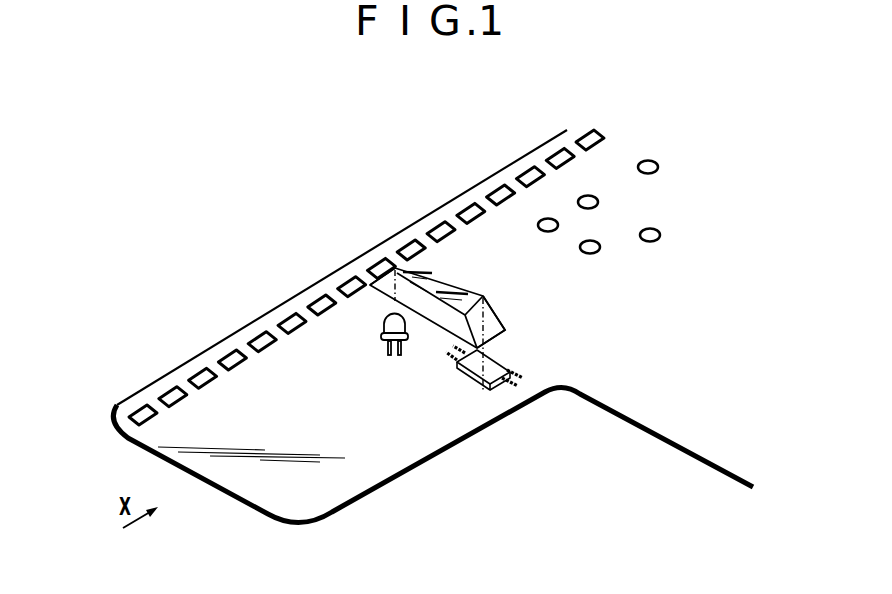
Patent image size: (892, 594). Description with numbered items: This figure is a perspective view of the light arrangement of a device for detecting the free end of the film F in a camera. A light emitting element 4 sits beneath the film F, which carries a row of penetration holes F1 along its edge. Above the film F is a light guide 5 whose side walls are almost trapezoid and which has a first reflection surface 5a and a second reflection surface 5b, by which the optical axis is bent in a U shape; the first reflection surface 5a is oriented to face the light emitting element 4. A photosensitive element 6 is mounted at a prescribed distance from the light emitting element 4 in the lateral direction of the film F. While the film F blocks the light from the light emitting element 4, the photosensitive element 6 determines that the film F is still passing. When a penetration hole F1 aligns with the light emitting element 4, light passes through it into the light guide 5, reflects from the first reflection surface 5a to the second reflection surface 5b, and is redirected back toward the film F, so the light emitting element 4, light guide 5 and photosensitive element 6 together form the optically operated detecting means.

The film F is at (242, 405).
The penetration hole F1 is at (552, 218).
The light emitting element 4 is at (385, 320).
The light guide 5 is at (452, 287).
The first reflection surface 5a is at (398, 258).
The second reflection surface 5b is at (505, 333).
The photosensitive element 6 is at (482, 392).